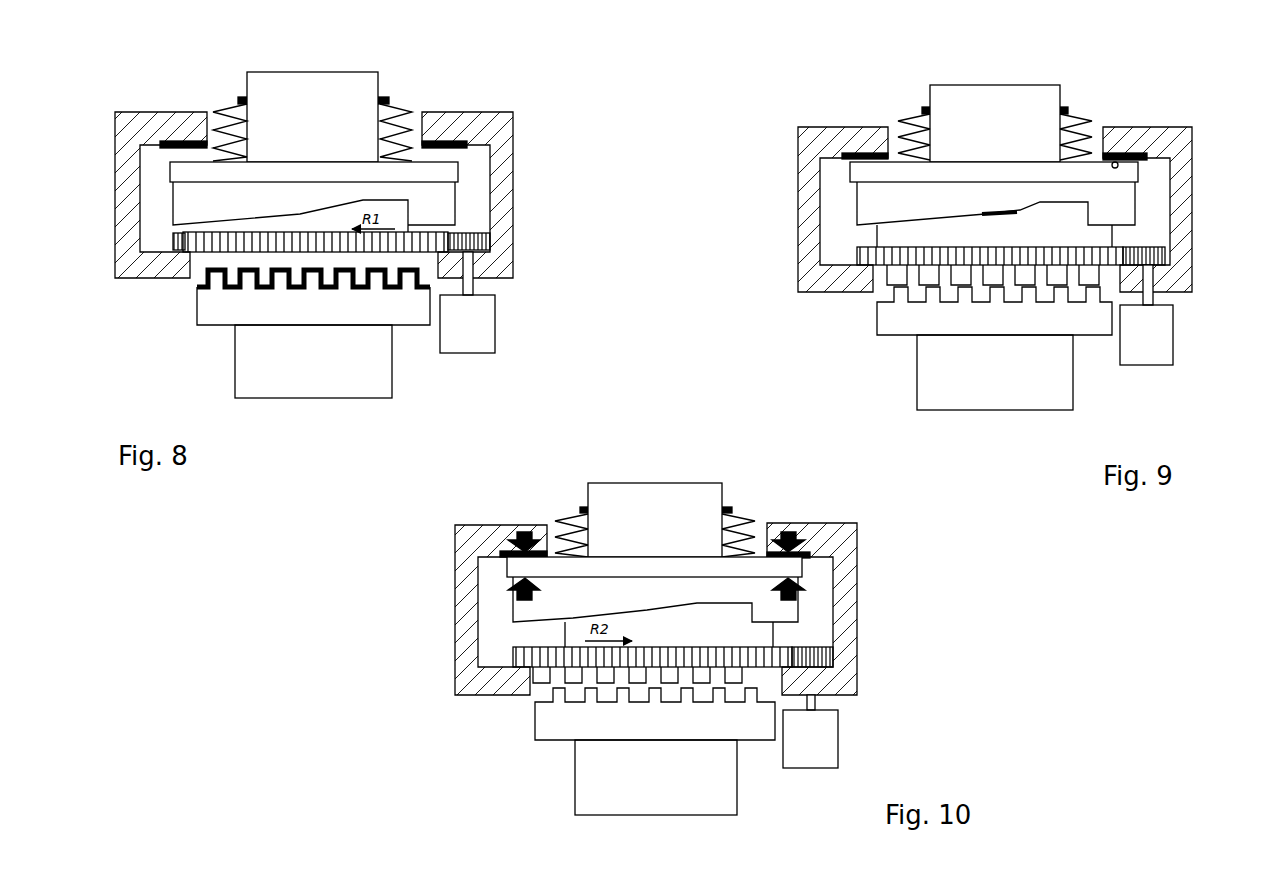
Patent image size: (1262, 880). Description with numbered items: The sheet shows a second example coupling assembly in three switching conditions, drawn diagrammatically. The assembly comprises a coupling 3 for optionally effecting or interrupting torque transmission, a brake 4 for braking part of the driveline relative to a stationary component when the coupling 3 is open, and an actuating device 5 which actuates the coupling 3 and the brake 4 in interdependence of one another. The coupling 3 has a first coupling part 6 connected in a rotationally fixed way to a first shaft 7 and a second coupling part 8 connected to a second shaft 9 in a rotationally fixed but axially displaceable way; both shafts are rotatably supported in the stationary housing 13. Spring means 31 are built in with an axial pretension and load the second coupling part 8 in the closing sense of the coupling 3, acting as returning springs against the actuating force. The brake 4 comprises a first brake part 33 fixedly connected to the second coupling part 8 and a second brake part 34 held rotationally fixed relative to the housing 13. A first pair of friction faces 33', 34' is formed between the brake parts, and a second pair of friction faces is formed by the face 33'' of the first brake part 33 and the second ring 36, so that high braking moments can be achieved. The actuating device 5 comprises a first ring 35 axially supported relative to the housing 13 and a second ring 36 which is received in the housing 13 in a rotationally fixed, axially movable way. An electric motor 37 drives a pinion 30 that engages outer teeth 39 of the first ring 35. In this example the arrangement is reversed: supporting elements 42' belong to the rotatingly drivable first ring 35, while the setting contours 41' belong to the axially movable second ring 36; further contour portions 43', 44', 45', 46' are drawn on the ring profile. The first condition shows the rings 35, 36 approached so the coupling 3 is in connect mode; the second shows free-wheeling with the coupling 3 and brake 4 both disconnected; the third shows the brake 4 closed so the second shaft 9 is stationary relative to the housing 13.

In FIG. 8, the coupling 3 is at (187, 288).
In FIG. 10, the coupling 3 is at (530, 697).
In FIG. 8, the brake 4 is at (150, 159).
In FIG. 9, the brake 4 is at (838, 168).
In FIG. 10, the brake 4 is at (822, 570).
In FIG. 8, the actuating device 5 is at (503, 290).
In FIG. 9, the actuating device 5 is at (1190, 305).
In FIG. 10, the actuating device 5 is at (845, 702).
In FIG. 8, the first coupling part 6 is at (218, 302).
In FIG. 9, the first coupling part 6 is at (895, 327).
In FIG. 10, the first coupling part 6 is at (655, 714).
In FIG. 8, the first shaft 7 is at (243, 393).
In FIG. 9, the first shaft 7 is at (1068, 405).
In FIG. 10, the first shaft 7 is at (585, 797).
In FIG. 8, the second coupling part 8 is at (205, 272).
In FIG. 9, the second coupling part 8 is at (885, 278).
In FIG. 8, the second shaft 9 is at (362, 85).
In FIG. 9, the second shaft 9 is at (945, 95).
In FIG. 10, the second shaft 9 is at (712, 492).
In FIG. 8, the housing 13 is at (115, 124).
In FIG. 9, the housing 13 is at (1177, 130).
In FIG. 10, the housing 13 is at (858, 547).
In FIG. 8, the pinion 30 is at (460, 245).
In FIG. 8, the spring means 31 is at (217, 108).
In FIG. 9, the spring means 31 is at (1068, 120).
In FIG. 10, the spring means 31 is at (567, 512).
In FIG. 8, the first brake part 33 is at (379, 153).
In FIG. 10, the first brake part 33 is at (675, 528).
In FIG. 9, the friction face 33' is at (1053, 159).
In FIG. 9, the friction face 33'' is at (800, 204).
In FIG. 8, the second brake part 34 is at (331, 106).
In FIG. 10, the second brake part 34 is at (655, 514).
In FIG. 9, the friction face 34' is at (996, 124).
In FIG. 8, the first ring 35 is at (190, 237).
In FIG. 9, the first ring 35 is at (1122, 245).
In FIG. 10, the first ring 35 is at (775, 653).
In FIG. 8, the second ring 36 is at (446, 176).
In FIG. 9, the second ring 36 is at (1125, 205).
In FIG. 10, the second ring 36 is at (793, 612).
In FIG. 8, the electric motor 37 is at (485, 342).
In FIG. 8, the outer teeth 39 is at (183, 245).
In FIG. 8, the setting contours 41' is at (302, 340).
In FIG. 9, the setting contours 41' is at (947, 346).
In FIG. 10, the setting contours 41' is at (653, 714).
In FIG. 8, the supporting elements 42' is at (409, 130).
In FIG. 9, the supporting elements 42' is at (1024, 136).
In FIG. 10, the supporting elements 42' is at (642, 536).
In FIG. 8, the cam surface 43' is at (419, 308).
In FIG. 9, the cam surface 43' is at (1096, 292).
In FIG. 10, the cam surface 43' is at (760, 716).
In FIG. 8, the cam surface 44' is at (363, 297).
In FIG. 9, the cam surface 44' is at (1060, 289).
In FIG. 10, the cam surface 44' is at (730, 705).
In FIG. 8, the cam surface 45' is at (325, 299).
In FIG. 9, the cam surface 45' is at (1020, 300).
In FIG. 10, the cam surface 45' is at (688, 705).
In FIG. 8, the cam surface 46' is at (262, 298).
In FIG. 9, the cam surface 46' is at (962, 304).
In FIG. 10, the cam surface 46' is at (589, 709).